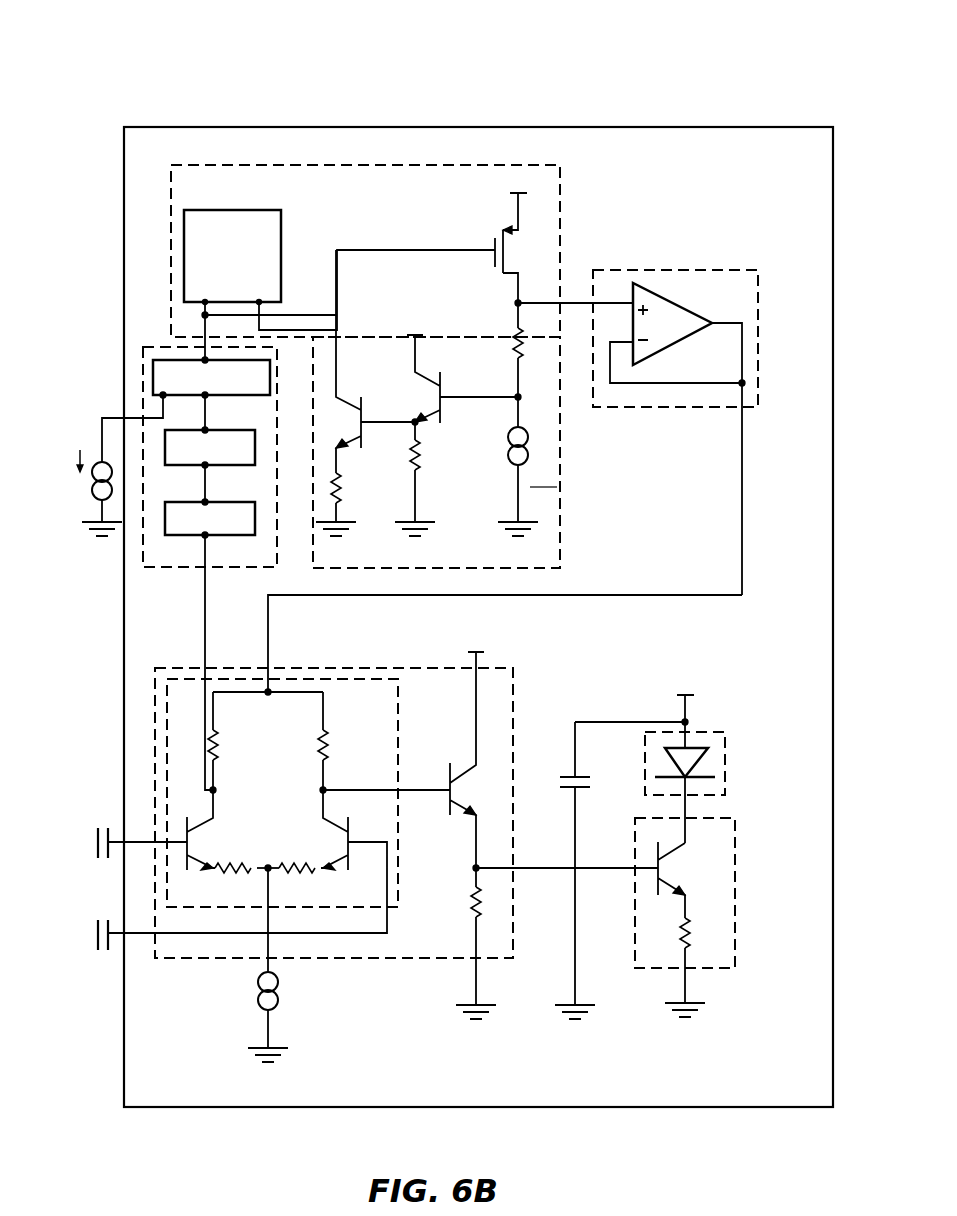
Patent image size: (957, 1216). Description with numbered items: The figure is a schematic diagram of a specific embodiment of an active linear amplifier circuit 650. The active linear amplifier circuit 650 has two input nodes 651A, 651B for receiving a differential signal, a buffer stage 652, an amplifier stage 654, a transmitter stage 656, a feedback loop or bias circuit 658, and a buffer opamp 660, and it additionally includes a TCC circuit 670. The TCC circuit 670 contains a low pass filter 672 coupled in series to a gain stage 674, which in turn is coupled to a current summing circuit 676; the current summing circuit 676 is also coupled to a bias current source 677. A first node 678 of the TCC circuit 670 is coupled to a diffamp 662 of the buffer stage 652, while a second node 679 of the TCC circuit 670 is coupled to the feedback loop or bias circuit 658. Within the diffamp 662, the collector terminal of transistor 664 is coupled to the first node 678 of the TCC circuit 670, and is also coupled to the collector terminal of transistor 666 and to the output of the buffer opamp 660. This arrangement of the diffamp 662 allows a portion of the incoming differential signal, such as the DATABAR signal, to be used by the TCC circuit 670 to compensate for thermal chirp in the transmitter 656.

The active linear amplifier circuit 650 is at (188, 88).
The input node 651A is at (92, 823).
The input node 651B is at (93, 938).
The buffer stage 652 is at (425, 828).
The amplifier stage 654 is at (735, 850).
The transmitter stage 656 is at (725, 740).
The feedback loop or bias circuit 658 is at (563, 218).
The buffer opamp 660 is at (675, 270).
The diffamp 662 is at (302, 845).
The transistor 664 is at (208, 837).
The transistor 666 is at (326, 845).
The TCC circuit 670 is at (167, 457).
The low pass filter 672 is at (210, 518).
The gain stage 674 is at (210, 447).
The current summing circuit 676 is at (153, 380).
The bias current source 677 is at (92, 495).
The first node 678 is at (193, 537).
The second node 679 is at (200, 357).